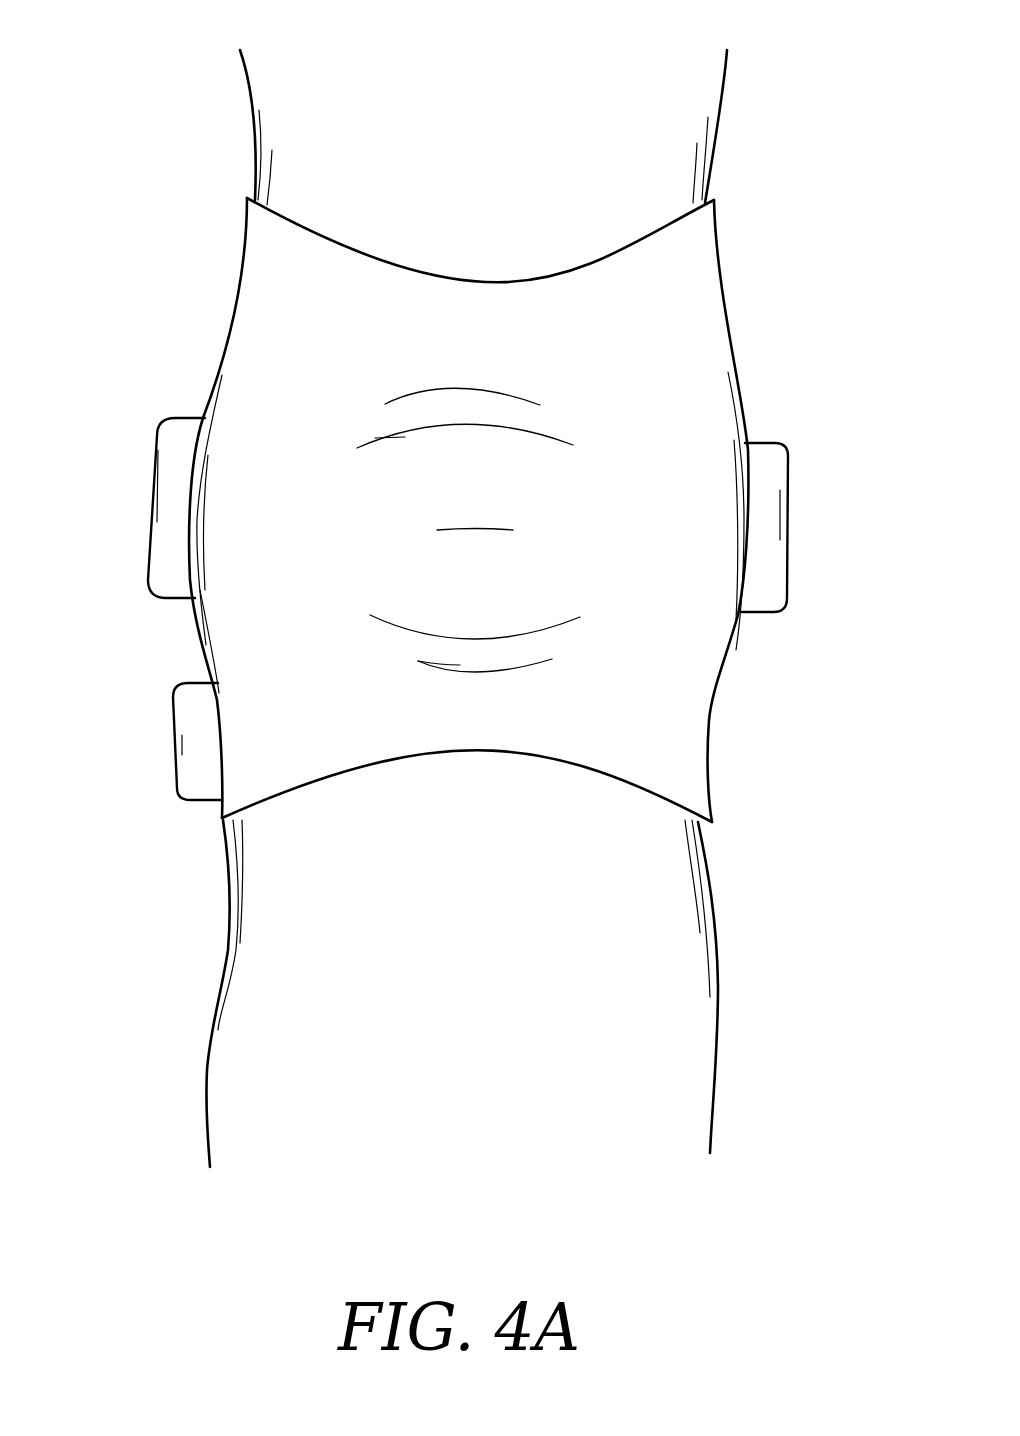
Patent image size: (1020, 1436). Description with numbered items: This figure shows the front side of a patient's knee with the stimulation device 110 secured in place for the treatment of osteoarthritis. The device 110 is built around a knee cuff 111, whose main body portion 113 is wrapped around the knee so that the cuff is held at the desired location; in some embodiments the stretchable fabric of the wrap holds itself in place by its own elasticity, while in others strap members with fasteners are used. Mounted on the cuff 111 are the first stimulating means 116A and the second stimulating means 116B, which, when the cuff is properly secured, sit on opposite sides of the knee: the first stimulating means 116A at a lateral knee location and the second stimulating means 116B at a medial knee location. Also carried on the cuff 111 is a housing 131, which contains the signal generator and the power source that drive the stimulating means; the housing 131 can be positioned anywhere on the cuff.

The stimulation device 110 is at (803, 90).
The knee cuff 111 is at (710, 290).
The main body portion 113 is at (497, 510).
The first stimulating means 116A is at (150, 507).
The second stimulating means 116B is at (787, 527).
The housing 131 is at (175, 745).